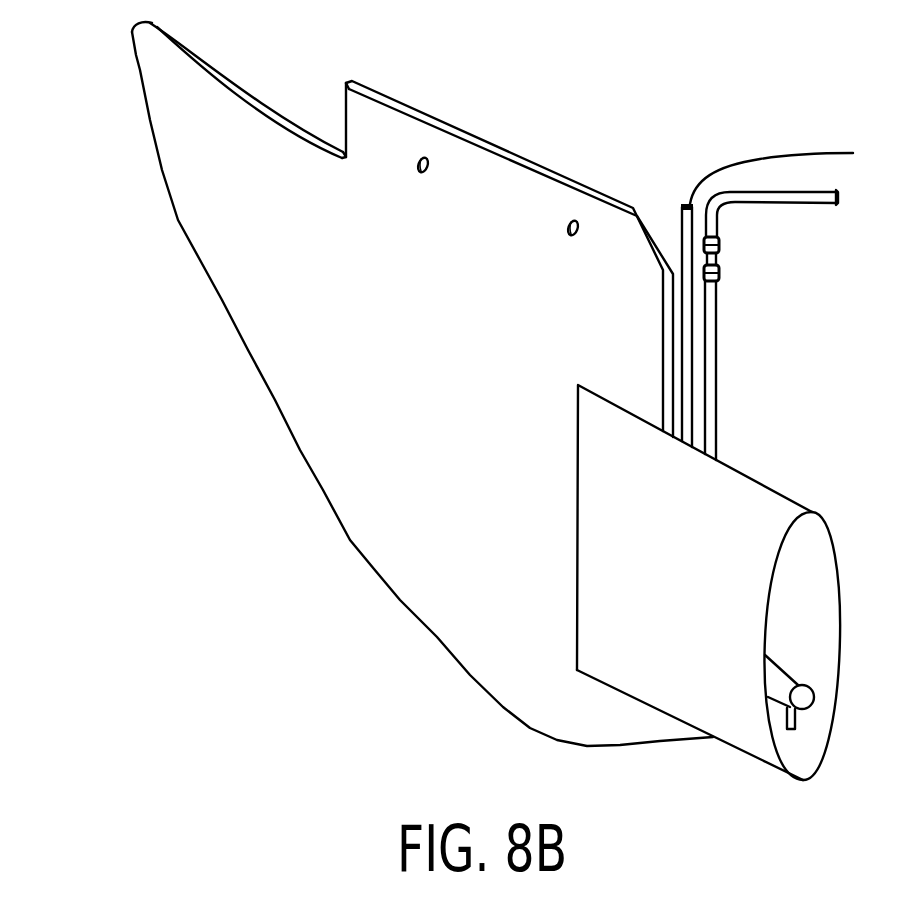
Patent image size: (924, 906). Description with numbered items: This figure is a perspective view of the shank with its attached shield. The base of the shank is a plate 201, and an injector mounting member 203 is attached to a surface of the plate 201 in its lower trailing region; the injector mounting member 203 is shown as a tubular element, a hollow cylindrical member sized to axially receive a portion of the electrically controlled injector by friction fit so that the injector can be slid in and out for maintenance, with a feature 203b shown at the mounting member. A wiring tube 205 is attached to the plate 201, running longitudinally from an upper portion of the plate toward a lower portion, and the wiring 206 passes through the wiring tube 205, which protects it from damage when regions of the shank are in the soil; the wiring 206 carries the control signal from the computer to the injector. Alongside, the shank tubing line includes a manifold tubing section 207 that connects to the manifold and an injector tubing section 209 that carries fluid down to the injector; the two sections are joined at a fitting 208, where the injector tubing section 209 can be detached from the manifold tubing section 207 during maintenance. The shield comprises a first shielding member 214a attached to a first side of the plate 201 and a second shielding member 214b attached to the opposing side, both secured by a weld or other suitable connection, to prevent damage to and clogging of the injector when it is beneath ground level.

The shank plate 201 is at (374, 569).
The injector mounting member 203 is at (798, 667).
The nozzle outlet 203b is at (805, 697).
The wiring tube 205 is at (670, 227).
The wiring 206 is at (762, 163).
The manifold tubing section 207 is at (818, 205).
The fitting 208 is at (730, 262).
The injector tubing section 209 is at (716, 357).
The first shielding member 214a is at (708, 692).
The second shielding member 214b is at (808, 595).